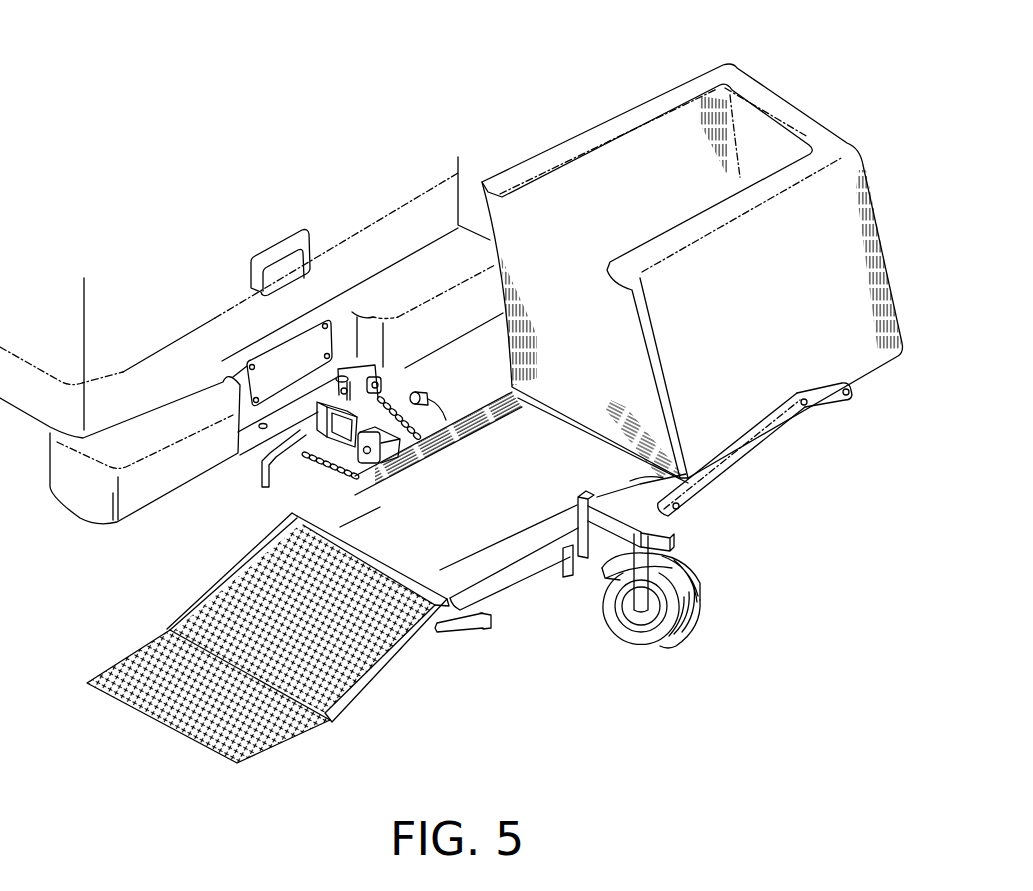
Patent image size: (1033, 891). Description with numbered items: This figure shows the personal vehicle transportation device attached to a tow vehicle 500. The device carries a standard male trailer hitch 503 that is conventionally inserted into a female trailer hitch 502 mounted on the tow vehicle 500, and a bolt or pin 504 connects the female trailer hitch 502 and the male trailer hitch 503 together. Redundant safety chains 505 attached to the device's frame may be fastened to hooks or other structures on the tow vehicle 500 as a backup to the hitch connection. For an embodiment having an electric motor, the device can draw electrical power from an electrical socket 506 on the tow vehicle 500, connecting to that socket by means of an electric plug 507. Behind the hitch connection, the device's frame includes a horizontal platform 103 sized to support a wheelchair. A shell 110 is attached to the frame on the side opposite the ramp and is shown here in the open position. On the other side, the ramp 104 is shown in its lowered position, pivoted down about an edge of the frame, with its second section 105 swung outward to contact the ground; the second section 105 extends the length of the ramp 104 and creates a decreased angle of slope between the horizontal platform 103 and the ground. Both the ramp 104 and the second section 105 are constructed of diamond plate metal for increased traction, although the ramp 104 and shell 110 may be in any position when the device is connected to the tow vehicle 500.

The tow vehicle 500 is at (53, 323).
The female trailer hitch 502 is at (300, 420).
The male trailer hitch 503 is at (305, 468).
The bolt or pin 504 is at (265, 480).
The redundant safety chains 505 is at (398, 380).
The electrical socket 506 is at (379, 376).
The electric plug 507 is at (430, 390).
The shell 110 is at (768, 102).
The horizontal platform 103 is at (680, 497).
The ramp 104 is at (383, 650).
The second section 105 is at (250, 743).